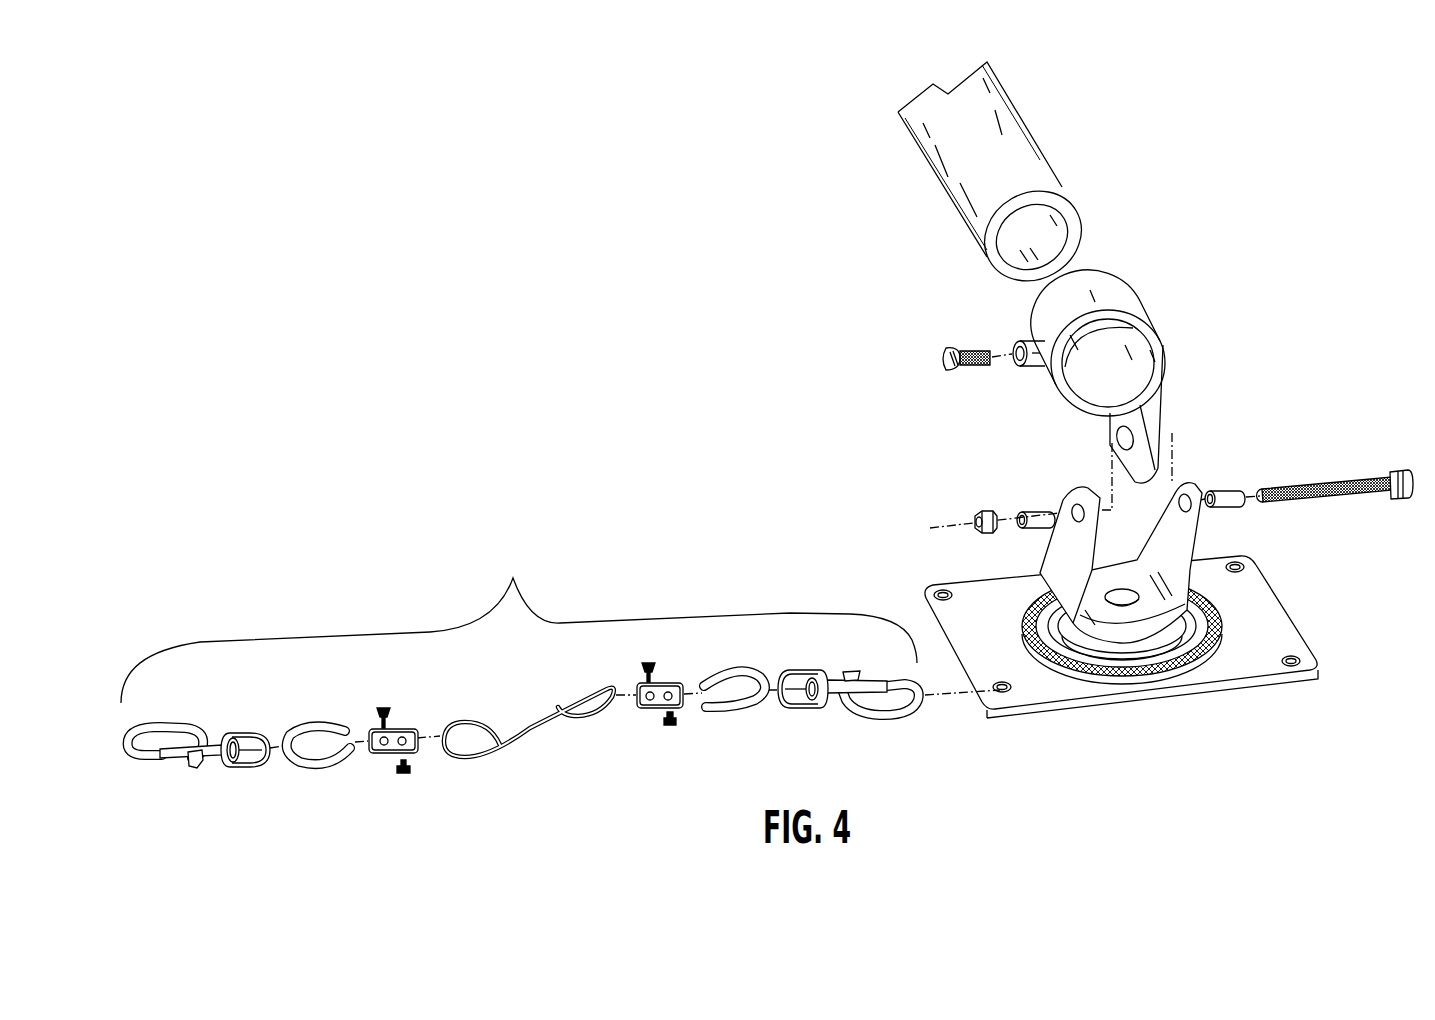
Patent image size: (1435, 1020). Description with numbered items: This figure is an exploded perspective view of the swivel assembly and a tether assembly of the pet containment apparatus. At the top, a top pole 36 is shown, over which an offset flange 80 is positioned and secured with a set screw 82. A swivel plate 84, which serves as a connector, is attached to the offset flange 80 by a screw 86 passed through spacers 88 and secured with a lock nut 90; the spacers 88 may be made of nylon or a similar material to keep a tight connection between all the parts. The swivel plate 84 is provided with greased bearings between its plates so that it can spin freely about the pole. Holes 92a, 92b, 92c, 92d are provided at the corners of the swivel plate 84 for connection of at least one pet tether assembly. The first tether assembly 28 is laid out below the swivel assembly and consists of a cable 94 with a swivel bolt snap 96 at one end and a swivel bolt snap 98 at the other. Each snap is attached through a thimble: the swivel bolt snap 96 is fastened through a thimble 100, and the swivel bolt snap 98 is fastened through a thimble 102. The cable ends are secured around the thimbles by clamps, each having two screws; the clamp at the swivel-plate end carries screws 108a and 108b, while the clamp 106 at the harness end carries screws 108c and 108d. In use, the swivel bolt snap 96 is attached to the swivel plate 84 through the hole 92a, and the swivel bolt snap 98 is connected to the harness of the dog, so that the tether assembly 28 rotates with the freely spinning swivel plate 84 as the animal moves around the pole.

The first tether assembly 28 is at (519, 624).
The top pole 36 is at (1010, 165).
The offset flange 80 is at (1110, 307).
The set screw 82 is at (972, 347).
The swivel plate 84 is at (1270, 620).
The screw 86 is at (1323, 478).
The spacers 88 is at (1040, 512).
The lock nut 90 is at (985, 510).
The hole 92a is at (1003, 692).
The hole 92b is at (938, 592).
The hole 92c is at (1238, 567).
The hole 92d is at (1291, 667).
The cable 94 is at (500, 745).
The swivel bolt snap 96 is at (885, 712).
The swivel bolt snap 98 is at (190, 765).
The thimble 100 is at (722, 705).
The thimble 102 is at (300, 757).
The clamp 106 is at (372, 753).
The screw 108a is at (668, 728).
The screw 108b is at (658, 662).
The screw 108c is at (403, 773).
The screw 108d is at (385, 712).